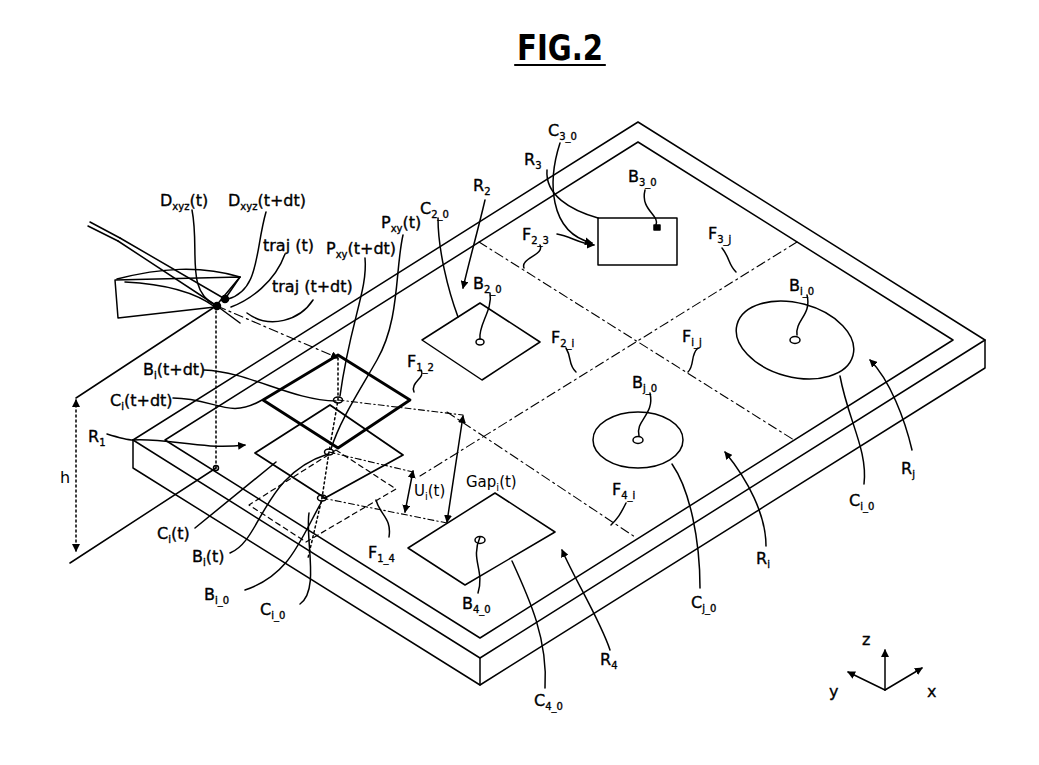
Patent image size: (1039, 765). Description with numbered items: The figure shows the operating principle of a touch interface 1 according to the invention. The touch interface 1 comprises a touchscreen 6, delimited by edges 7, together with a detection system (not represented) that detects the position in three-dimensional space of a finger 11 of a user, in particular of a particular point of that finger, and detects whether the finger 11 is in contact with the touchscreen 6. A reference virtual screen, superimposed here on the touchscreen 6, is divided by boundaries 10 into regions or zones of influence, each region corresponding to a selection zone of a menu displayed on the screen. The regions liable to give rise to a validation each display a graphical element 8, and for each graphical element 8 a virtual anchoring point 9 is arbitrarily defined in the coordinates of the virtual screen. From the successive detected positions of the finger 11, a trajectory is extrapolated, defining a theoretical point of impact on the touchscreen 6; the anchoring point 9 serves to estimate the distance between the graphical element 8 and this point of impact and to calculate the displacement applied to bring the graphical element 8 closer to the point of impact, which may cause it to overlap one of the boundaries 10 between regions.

The touch interface 1 is at (576, 403).
The touchscreen 6 is at (937, 317).
The edges 7 is at (912, 338).
The graphical element 8 is at (628, 218).
The virtual anchoring point 9 is at (794, 337).
The boundaries 10 is at (657, 347).
The finger 11 is at (126, 276).